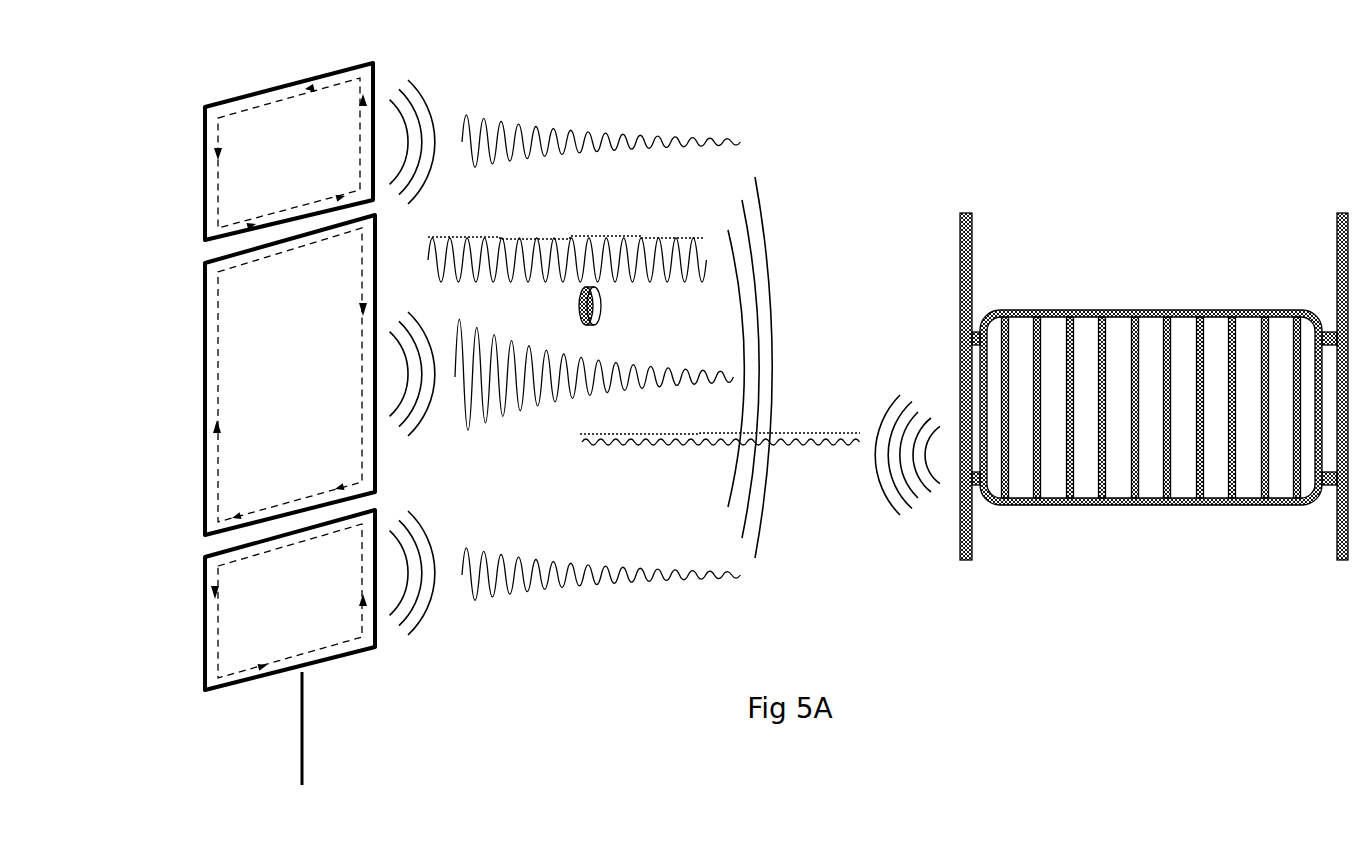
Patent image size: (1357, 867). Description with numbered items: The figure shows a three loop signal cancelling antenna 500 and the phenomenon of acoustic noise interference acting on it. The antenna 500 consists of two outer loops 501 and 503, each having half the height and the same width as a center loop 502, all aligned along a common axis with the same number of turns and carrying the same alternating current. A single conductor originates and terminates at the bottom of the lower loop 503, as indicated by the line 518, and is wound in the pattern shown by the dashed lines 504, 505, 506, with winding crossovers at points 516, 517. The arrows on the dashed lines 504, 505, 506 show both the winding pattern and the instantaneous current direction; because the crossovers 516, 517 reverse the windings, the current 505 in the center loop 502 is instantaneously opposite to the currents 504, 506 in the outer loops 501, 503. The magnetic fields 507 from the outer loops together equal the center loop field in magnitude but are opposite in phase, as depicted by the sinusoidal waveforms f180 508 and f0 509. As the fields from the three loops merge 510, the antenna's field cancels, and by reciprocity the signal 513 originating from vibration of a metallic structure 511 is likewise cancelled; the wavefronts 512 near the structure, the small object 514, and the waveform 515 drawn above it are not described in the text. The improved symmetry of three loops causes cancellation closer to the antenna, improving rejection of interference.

The three loop signal cancelling antenna 500 is at (148, 102).
The upper outer loop 501 is at (183, 203).
The center loop 502 is at (183, 398).
The lower outer loop 503 is at (183, 630).
The dashed line winding pattern in upper loop 504 is at (357, 185).
The dashed line winding pattern in center loop 505 is at (357, 403).
The dashed line winding pattern in lower loop 506 is at (357, 632).
The magnetic fields 507 is at (437, 97).
The sinusoidal waveform f180 508 is at (592, 113).
The sinusoidal waveform f0 509 is at (533, 430).
The merged magnetic fields 510 is at (787, 342).
The metallic structure 511 is at (1117, 303).
The field received at receiver 512 is at (903, 388).
The cancelled signal 513 is at (805, 452).
The foreign object 514 is at (610, 312).
The field signal at foreign object 515 is at (613, 230).
The first winding crossover 516 is at (290, 243).
The second winding crossover 517 is at (295, 502).
The conductor origin and termination line 518 is at (318, 745).